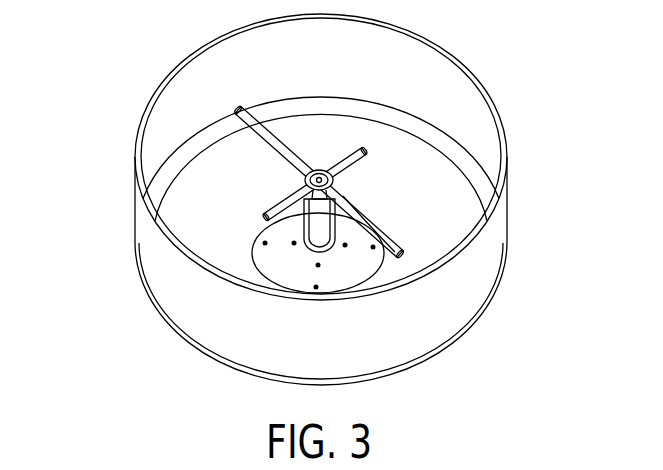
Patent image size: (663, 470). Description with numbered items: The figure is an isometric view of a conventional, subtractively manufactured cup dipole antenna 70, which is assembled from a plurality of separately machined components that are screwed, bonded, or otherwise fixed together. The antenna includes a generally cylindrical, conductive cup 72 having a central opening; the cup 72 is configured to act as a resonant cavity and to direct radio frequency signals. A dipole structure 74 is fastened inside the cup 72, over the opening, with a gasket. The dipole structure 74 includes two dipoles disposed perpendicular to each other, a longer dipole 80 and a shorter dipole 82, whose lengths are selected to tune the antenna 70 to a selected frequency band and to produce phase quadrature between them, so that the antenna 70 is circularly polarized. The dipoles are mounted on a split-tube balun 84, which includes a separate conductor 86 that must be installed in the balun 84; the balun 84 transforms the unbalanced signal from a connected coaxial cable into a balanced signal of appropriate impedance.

The conventional cup dipole antenna 70 is at (118, 79).
The conductive cup 72 is at (480, 102).
The dipole structure 74 is at (213, 270).
The longer dipole 80 is at (273, 148).
The shorter dipole 82 is at (368, 160).
The split-tube balun 84 is at (313, 233).
The separate conductor 86 is at (322, 172).